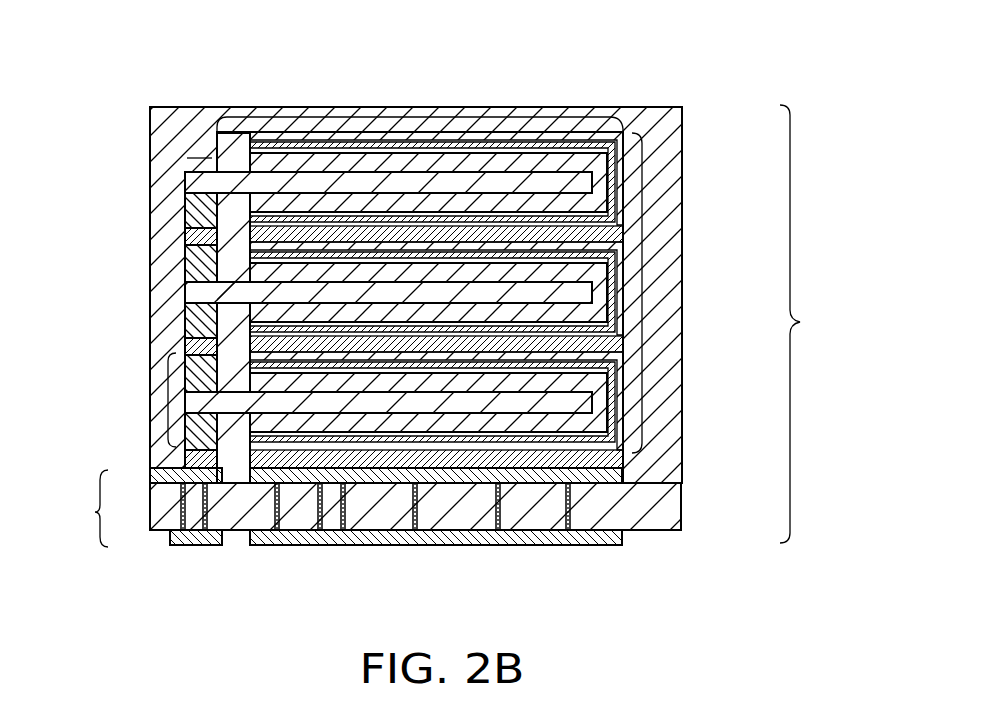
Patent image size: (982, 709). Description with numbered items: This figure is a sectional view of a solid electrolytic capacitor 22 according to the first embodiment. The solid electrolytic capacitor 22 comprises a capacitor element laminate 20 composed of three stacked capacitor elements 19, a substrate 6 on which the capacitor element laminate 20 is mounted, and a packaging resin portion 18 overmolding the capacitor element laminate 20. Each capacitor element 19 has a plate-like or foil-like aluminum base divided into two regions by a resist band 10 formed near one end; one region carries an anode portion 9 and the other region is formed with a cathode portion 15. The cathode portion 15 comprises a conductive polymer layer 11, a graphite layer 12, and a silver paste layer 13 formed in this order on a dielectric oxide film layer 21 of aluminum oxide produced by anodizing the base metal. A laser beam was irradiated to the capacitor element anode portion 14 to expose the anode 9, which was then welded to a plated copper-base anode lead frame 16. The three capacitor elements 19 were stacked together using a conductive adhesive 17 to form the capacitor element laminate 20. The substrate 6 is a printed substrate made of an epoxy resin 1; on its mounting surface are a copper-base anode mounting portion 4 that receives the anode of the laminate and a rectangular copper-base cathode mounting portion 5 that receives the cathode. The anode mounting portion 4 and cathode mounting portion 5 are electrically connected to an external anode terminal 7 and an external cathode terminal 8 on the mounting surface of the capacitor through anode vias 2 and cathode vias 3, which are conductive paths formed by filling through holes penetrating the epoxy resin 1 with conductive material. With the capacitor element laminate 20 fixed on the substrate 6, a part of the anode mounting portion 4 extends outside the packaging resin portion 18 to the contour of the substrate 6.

The epoxy resin 1 is at (650, 502).
The anode vias 2 is at (212, 510).
The cathode vias 3 is at (345, 513).
The anode mounting portion 4 is at (162, 473).
The cathode mounting portion 5 is at (622, 475).
The substrate 6 is at (95, 512).
The external anode terminal 7 is at (197, 545).
The external cathode terminal 8 is at (517, 545).
The anode portion 9 is at (187, 183).
The resist band 10 is at (228, 148).
The conductive polymer layer 11 is at (605, 212).
The graphite layer 12 is at (257, 220).
The silver paste layer 13 is at (250, 242).
The capacitor element anode portion 14 is at (212, 158).
The cathode portion 15 is at (415, 107).
The anode lead frame 16 is at (185, 320).
The conductive adhesive 17 is at (620, 240).
The packaging resin portion 18 is at (663, 127).
The capacitor element 19 is at (167, 400).
The capacitor element laminate 20 is at (640, 294).
The dielectric oxide film layer 21 is at (598, 162).
The solid electrolytic capacitor 22 is at (813, 324).